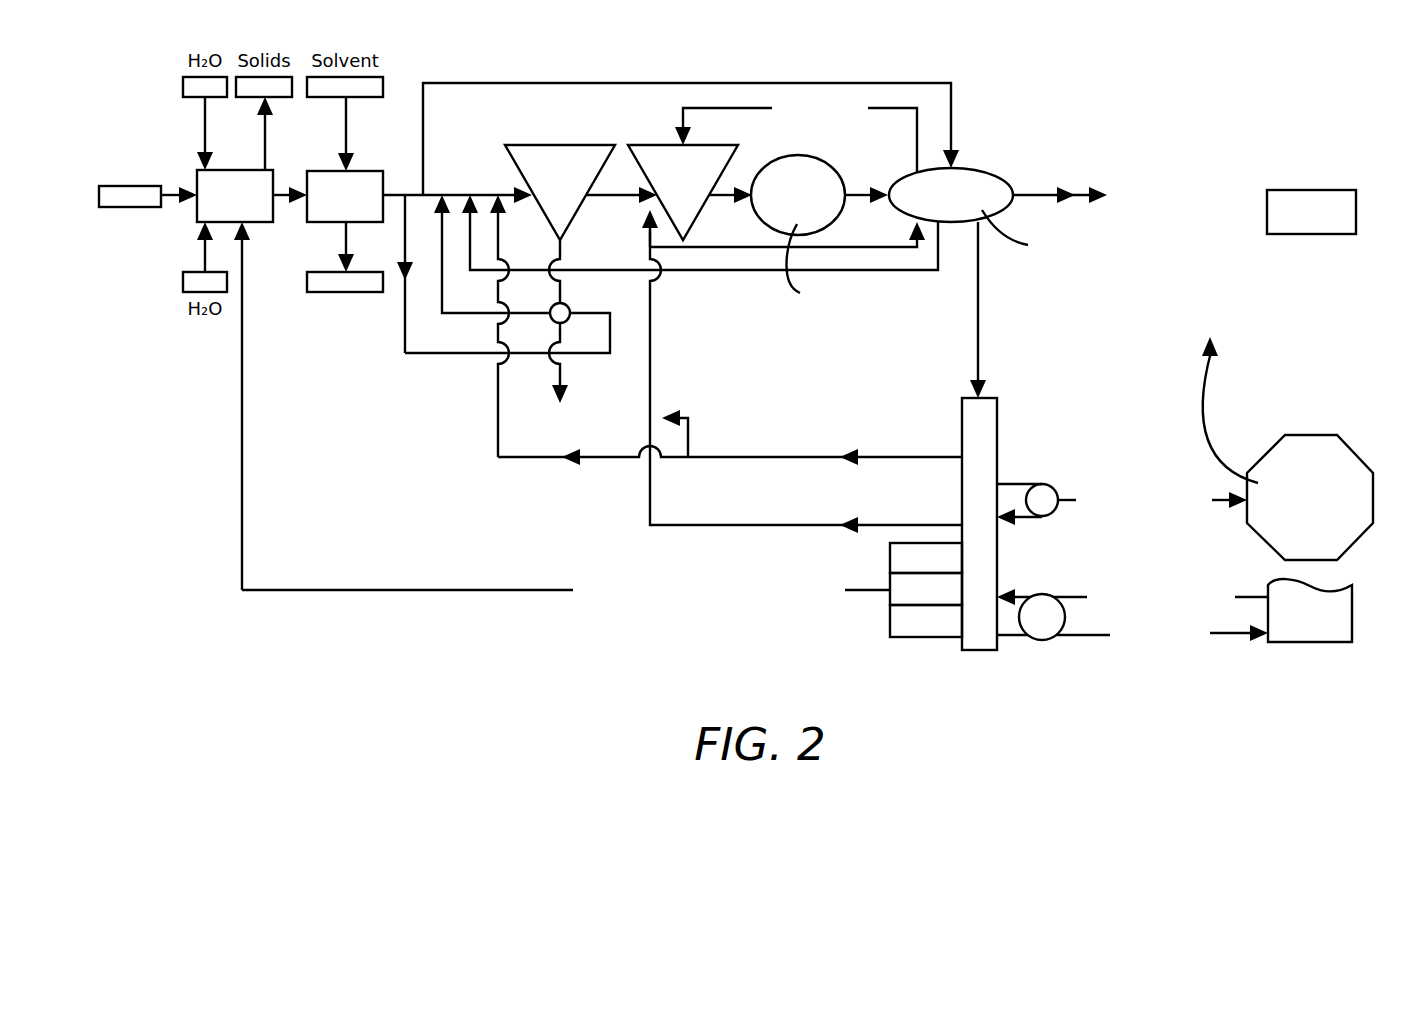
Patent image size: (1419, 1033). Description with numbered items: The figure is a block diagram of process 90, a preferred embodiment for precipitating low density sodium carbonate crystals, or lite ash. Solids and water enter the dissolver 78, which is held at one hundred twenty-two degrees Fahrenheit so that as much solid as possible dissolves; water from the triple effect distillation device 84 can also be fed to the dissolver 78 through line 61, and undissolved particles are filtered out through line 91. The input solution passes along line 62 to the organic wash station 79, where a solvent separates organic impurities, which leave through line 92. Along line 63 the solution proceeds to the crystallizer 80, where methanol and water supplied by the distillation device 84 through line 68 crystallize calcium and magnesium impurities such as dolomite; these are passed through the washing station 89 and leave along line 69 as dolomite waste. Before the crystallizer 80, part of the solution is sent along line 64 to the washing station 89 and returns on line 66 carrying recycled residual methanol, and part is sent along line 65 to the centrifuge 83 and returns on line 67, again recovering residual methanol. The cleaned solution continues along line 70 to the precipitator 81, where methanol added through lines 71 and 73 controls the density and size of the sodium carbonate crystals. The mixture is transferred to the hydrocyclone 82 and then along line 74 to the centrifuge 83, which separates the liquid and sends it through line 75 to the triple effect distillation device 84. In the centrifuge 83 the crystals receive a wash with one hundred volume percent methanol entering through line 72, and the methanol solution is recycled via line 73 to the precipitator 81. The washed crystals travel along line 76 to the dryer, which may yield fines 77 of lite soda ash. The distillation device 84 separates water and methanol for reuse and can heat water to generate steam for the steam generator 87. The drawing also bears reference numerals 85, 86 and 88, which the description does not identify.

The line 61 is at (242, 415).
The line 62 is at (281, 185).
The line 63 is at (495, 193).
The line 64 is at (405, 328).
The line 65 is at (490, 83).
The line 66 is at (405, 255).
The line 67 is at (582, 270).
The line 68 is at (498, 390).
The line 69 is at (565, 372).
The line 70 is at (628, 197).
The line 71 is at (652, 350).
The line 72 is at (765, 249).
The line 73 is at (720, 108).
The line 74 is at (855, 190).
The line 75 is at (978, 312).
The line 76 is at (1038, 193).
The fines 77 is at (1297, 190).
The dissolver 78 is at (197, 168).
The organic wash station 79 is at (353, 171).
The crystallizer 80 is at (553, 145).
The precipitator 81 is at (660, 145).
The hydrocyclone 82 is at (822, 156).
The centrifuge 83 is at (965, 168).
The triple effect distillation device 84 is at (997, 418).
The heat exchanger pump 85 is at (1042, 484).
The steam pump 86 is at (1050, 640).
The steam generator 87 is at (1337, 642).
The water tank 88 is at (1337, 545).
The washing station 89 is at (570, 306).
The process 90 is at (1104, 70).
The line 91 is at (265, 133).
The line 92 is at (346, 240).